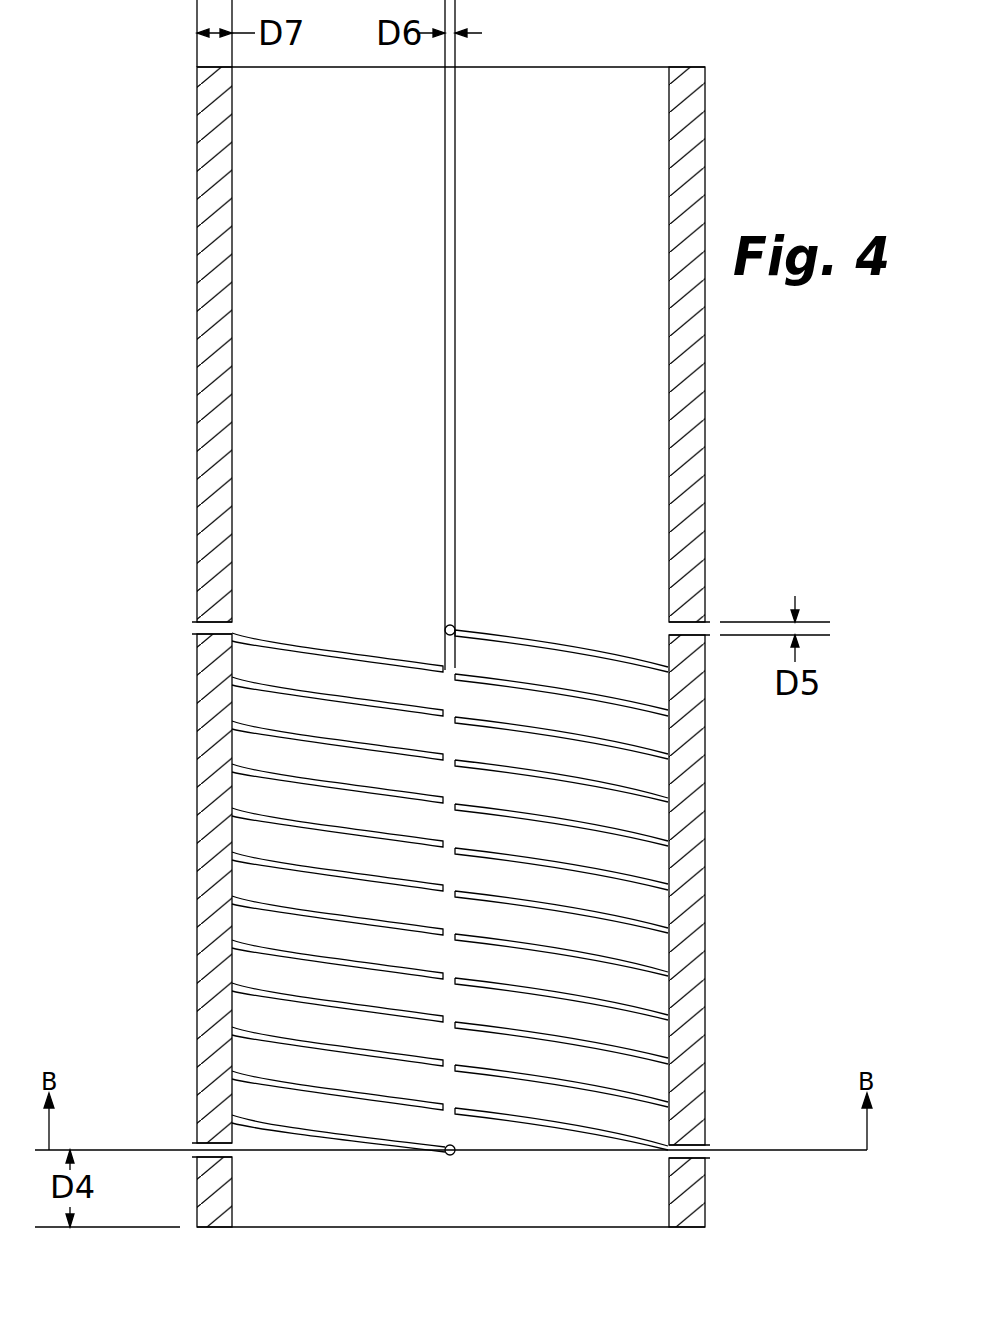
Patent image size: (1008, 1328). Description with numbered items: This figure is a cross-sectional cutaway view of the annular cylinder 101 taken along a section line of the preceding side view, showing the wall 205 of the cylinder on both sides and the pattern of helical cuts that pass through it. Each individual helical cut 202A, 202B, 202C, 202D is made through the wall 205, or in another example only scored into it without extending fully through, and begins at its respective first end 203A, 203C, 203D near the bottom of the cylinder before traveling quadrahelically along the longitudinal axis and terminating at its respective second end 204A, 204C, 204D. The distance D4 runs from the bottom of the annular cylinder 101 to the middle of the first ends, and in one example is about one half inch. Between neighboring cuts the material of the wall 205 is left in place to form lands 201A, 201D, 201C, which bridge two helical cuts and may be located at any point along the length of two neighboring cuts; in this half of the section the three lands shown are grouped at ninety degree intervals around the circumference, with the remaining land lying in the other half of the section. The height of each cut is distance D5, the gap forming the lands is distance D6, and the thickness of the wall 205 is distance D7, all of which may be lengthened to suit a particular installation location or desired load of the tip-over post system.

The annular cylinder 101 is at (330, 312).
The wall 205 is at (221, 186).
The land 201A is at (216, 890).
The land 201C is at (684, 890).
The land 201D is at (446, 703).
The second end 204A is at (200, 630).
The second end 204C is at (700, 632).
The second end 204D is at (451, 626).
The first end 203A is at (199, 1152).
The first end 203C is at (700, 1152).
The first end 203D is at (450, 1156).
The helical cut 202D is at (676, 992).
The helical cut 202A is at (676, 1036).
The helical cut 202B is at (676, 1079).
The helical cut 202C is at (676, 1122).